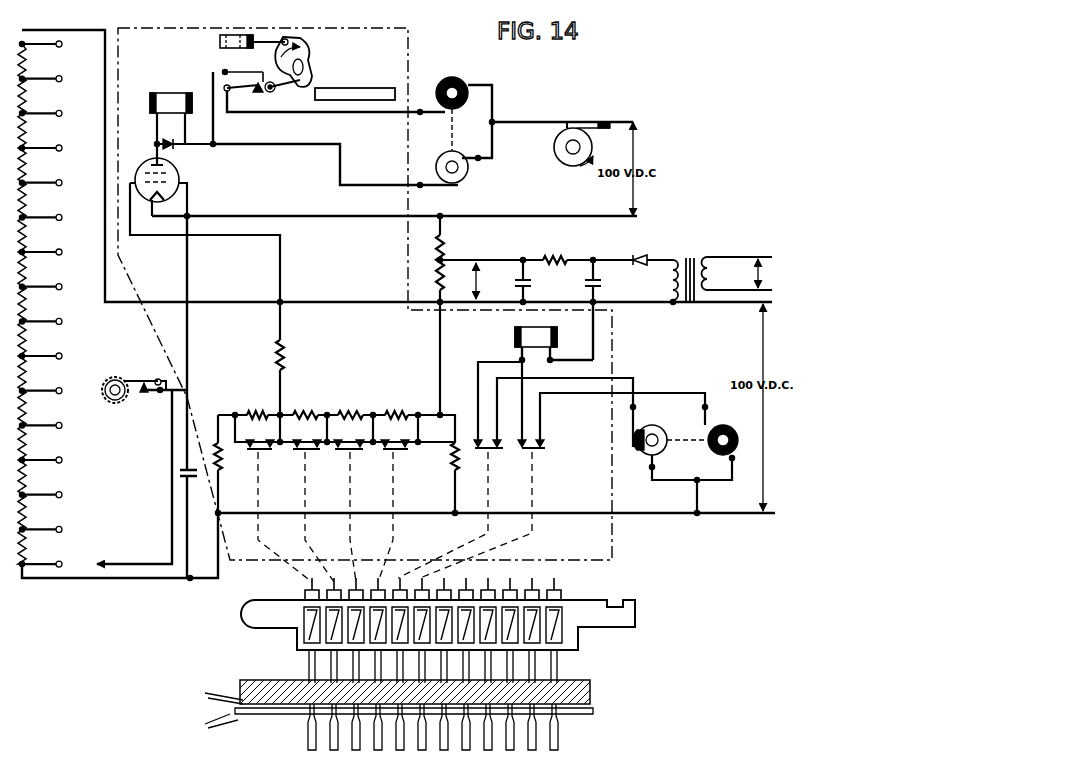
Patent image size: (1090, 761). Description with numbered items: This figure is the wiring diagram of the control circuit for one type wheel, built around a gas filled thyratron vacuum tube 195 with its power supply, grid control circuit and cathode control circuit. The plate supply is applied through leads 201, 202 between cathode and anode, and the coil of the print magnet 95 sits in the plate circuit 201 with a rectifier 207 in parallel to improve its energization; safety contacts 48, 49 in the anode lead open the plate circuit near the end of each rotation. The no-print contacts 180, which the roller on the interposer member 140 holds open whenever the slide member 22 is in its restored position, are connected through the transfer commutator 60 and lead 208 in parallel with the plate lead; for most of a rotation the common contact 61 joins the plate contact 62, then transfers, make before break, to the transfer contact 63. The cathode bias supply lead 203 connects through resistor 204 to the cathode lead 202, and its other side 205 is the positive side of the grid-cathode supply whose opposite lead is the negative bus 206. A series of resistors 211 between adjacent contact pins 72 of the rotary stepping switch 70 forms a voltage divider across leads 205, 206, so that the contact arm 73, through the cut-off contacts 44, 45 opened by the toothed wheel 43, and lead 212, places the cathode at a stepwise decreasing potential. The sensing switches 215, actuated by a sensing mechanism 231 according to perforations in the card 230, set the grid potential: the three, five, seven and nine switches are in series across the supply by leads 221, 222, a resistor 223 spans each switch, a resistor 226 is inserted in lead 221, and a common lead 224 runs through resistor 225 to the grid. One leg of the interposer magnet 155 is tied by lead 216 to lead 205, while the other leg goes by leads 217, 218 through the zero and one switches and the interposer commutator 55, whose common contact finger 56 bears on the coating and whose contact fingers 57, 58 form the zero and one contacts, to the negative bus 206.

The resistors 211 is at (62, 124).
The print magnet 95 is at (152, 95).
The interposer magnet 155 is at (218, 38).
The no-print contacts 180 is at (262, 74).
The interposer member 140 is at (312, 62).
The slide member 22 is at (362, 90).
The transfer contact 63 is at (421, 112).
The transfer commutator 60 is at (452, 78).
The common contact finger 61 is at (467, 130).
The plate contact 62 is at (422, 186).
The plate lead 201 is at (280, 144).
The safety contact 49 is at (604, 121).
The safety contact 48 is at (592, 132).
The lead 208 is at (385, 116).
The rectifier 207 is at (173, 146).
The thyratron vacuum tube 195 is at (180, 186).
The cathode lead 202 is at (543, 217).
The resistor 204 is at (438, 234).
The cathode bias supply lead 203 is at (502, 260).
The positive grid-cathode supply lead 205 is at (632, 304).
The lead 216 is at (594, 346).
The common lead 224 is at (282, 280).
The resistor 225 is at (282, 342).
The lead 212 is at (189, 340).
The cut-off contact 44 is at (154, 380).
The cut-off contact 45 is at (146, 394).
The toothed wheel 43 is at (113, 406).
The lead 222 is at (440, 372).
The lead 218 is at (477, 380).
The lead 217 is at (498, 422).
The resistor 226 is at (216, 440).
The resistors 223 is at (350, 410).
The sensing switches 215 is at (332, 450).
The lead 221 is at (218, 480).
The contact finger 58 is at (632, 422).
The contact finger 57 is at (705, 418).
The interposer commutator 55 is at (733, 430).
The common contact finger 56 is at (658, 467).
The rotary stepping switch 70 is at (82, 450).
The contact pins 72 is at (66, 500).
The contact arm 73 is at (140, 564).
The negative bus 206 is at (585, 514).
The sensing mechanism 231 is at (612, 672).
The card 230 is at (592, 720).